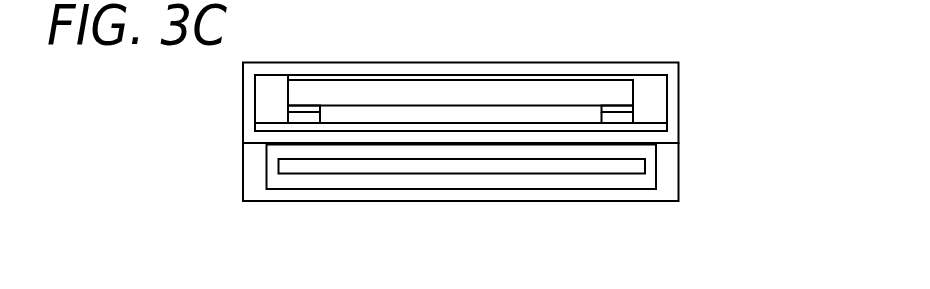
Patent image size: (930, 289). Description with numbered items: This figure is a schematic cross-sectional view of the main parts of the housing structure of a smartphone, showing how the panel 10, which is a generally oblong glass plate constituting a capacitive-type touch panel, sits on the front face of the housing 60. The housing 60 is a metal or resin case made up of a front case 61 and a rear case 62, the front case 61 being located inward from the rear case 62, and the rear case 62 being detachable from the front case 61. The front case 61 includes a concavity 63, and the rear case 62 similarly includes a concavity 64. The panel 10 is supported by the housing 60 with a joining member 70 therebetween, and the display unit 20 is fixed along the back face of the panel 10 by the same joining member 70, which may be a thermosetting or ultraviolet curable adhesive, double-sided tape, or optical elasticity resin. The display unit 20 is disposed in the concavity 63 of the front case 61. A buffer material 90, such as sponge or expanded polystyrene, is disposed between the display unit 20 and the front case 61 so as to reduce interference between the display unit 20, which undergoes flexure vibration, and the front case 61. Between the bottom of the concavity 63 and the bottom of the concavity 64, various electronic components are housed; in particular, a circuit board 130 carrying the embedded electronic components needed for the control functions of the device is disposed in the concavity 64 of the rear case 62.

The panel 10 is at (477, 61).
The display unit 20 is at (535, 92).
The housing 60 is at (485, 132).
The front case 61 is at (675, 92).
The rear case 62 is at (670, 170).
The concavity 63 is at (270, 98).
The concavity 64 is at (270, 172).
The joining member 70 is at (304, 108).
The buffer material 90 is at (323, 116).
The circuit board 130 is at (511, 170).